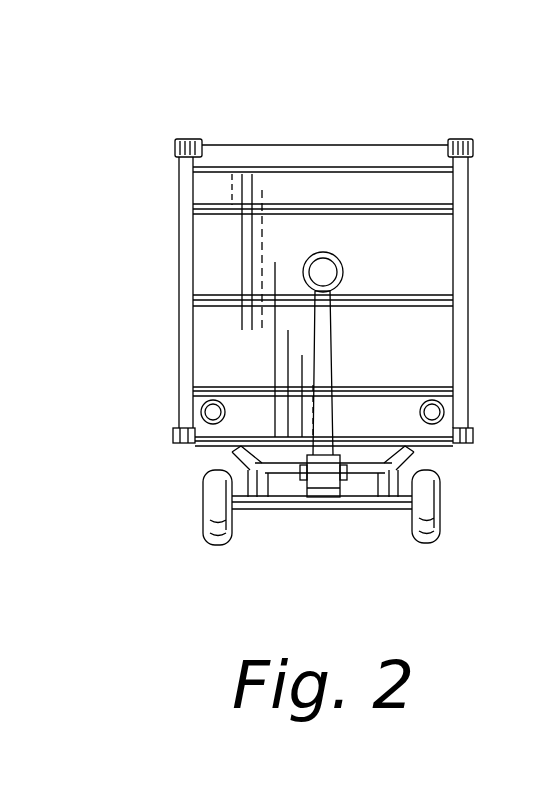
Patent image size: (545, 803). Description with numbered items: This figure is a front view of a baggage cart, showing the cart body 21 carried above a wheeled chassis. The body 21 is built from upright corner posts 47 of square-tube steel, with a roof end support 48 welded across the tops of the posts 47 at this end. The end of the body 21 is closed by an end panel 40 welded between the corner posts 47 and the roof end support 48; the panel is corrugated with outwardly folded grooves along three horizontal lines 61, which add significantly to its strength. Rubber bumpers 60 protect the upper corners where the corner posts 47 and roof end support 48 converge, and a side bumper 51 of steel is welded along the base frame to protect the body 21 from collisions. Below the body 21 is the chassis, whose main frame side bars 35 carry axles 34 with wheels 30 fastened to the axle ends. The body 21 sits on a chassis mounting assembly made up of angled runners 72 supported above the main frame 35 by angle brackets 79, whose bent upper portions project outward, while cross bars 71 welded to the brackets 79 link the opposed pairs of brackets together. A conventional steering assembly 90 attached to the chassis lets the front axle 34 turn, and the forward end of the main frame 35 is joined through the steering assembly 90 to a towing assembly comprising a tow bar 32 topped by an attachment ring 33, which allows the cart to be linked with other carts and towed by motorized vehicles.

The body 21 is at (170, 338).
The wheels 30 is at (440, 532).
The tow bar 32 is at (334, 336).
The attachment ring 33 is at (345, 263).
The axles 34 is at (390, 503).
The chassis main frame side bars 35 is at (272, 500).
The end panel 40 is at (346, 246).
The corner posts 47 is at (180, 268).
The roof end supports 48 is at (345, 151).
The side bumper 51 is at (172, 440).
The rubber bumpers 60 is at (187, 139).
The horizontal lines 61 is at (231, 264).
The cross bars 71 is at (300, 470).
The runners 72 is at (352, 452).
The angle brackets 79 is at (441, 460).
The steering assembly 90 is at (355, 500).